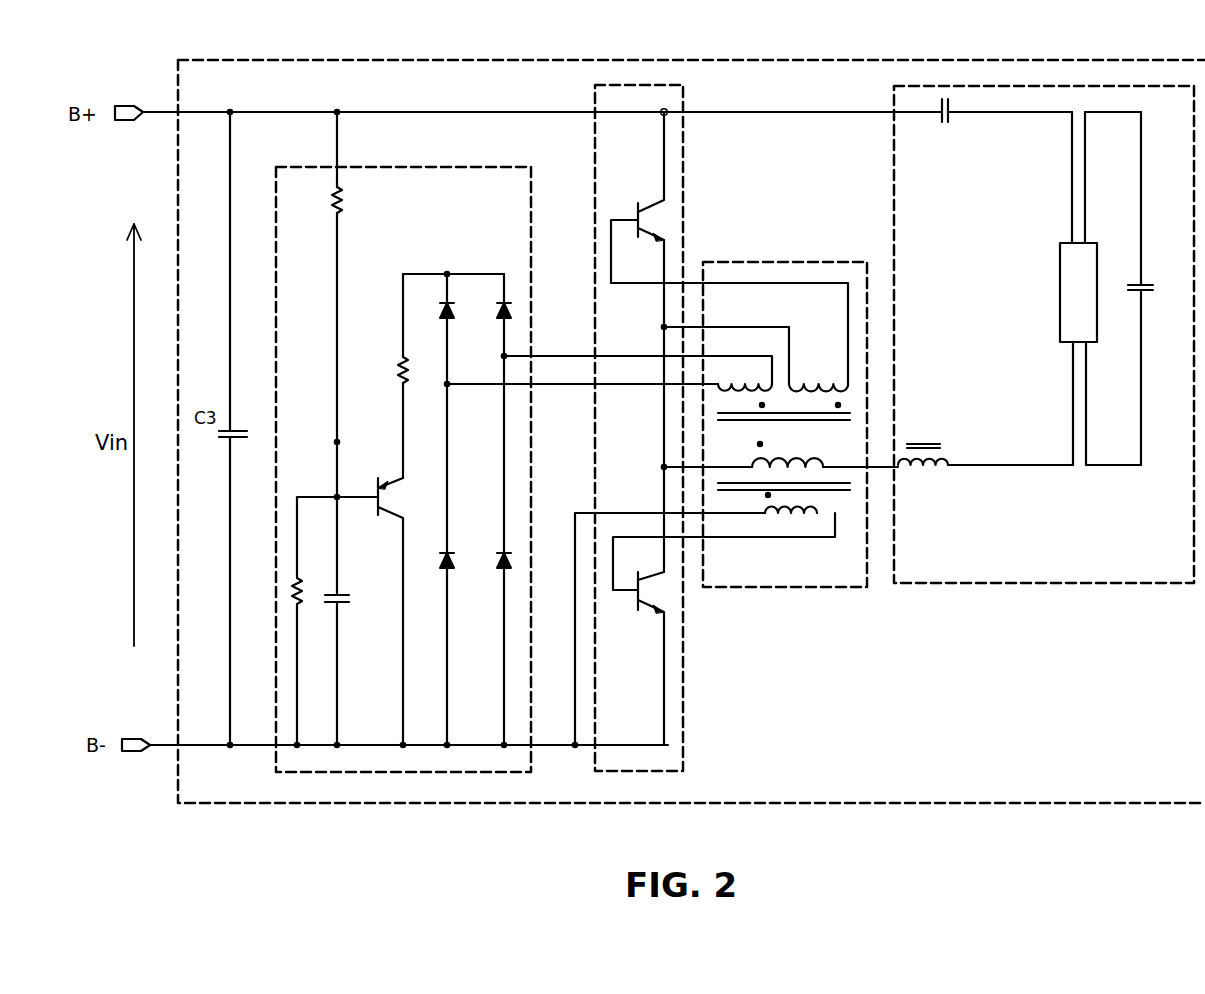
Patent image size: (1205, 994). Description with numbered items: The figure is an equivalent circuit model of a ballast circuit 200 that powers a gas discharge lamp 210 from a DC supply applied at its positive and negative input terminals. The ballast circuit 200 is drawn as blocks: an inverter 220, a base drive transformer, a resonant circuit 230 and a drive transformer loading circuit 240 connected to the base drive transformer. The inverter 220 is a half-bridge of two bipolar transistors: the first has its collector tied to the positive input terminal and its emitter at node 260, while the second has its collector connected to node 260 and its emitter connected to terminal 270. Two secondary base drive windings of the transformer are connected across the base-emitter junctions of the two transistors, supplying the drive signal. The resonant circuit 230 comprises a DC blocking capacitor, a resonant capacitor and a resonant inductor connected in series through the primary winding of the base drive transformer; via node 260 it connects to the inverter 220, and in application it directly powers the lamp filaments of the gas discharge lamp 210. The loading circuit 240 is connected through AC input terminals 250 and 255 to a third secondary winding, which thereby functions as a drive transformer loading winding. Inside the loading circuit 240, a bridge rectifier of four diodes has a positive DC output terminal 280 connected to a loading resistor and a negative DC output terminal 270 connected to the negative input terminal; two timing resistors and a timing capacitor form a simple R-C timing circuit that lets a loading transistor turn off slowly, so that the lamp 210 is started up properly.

The ballast circuit 200 is at (805, 803).
The gas discharge lamp 210 is at (1057, 280).
The inverter 220 is at (684, 708).
The resonant circuit 230 is at (1013, 583).
The drive transformer loading circuit 240 is at (423, 772).
The AC input terminal 250 is at (538, 355).
The AC input terminal 255 is at (540, 390).
The node 260 is at (662, 500).
The terminal 270 is at (372, 744).
The positive DC output terminal 280 is at (417, 274).